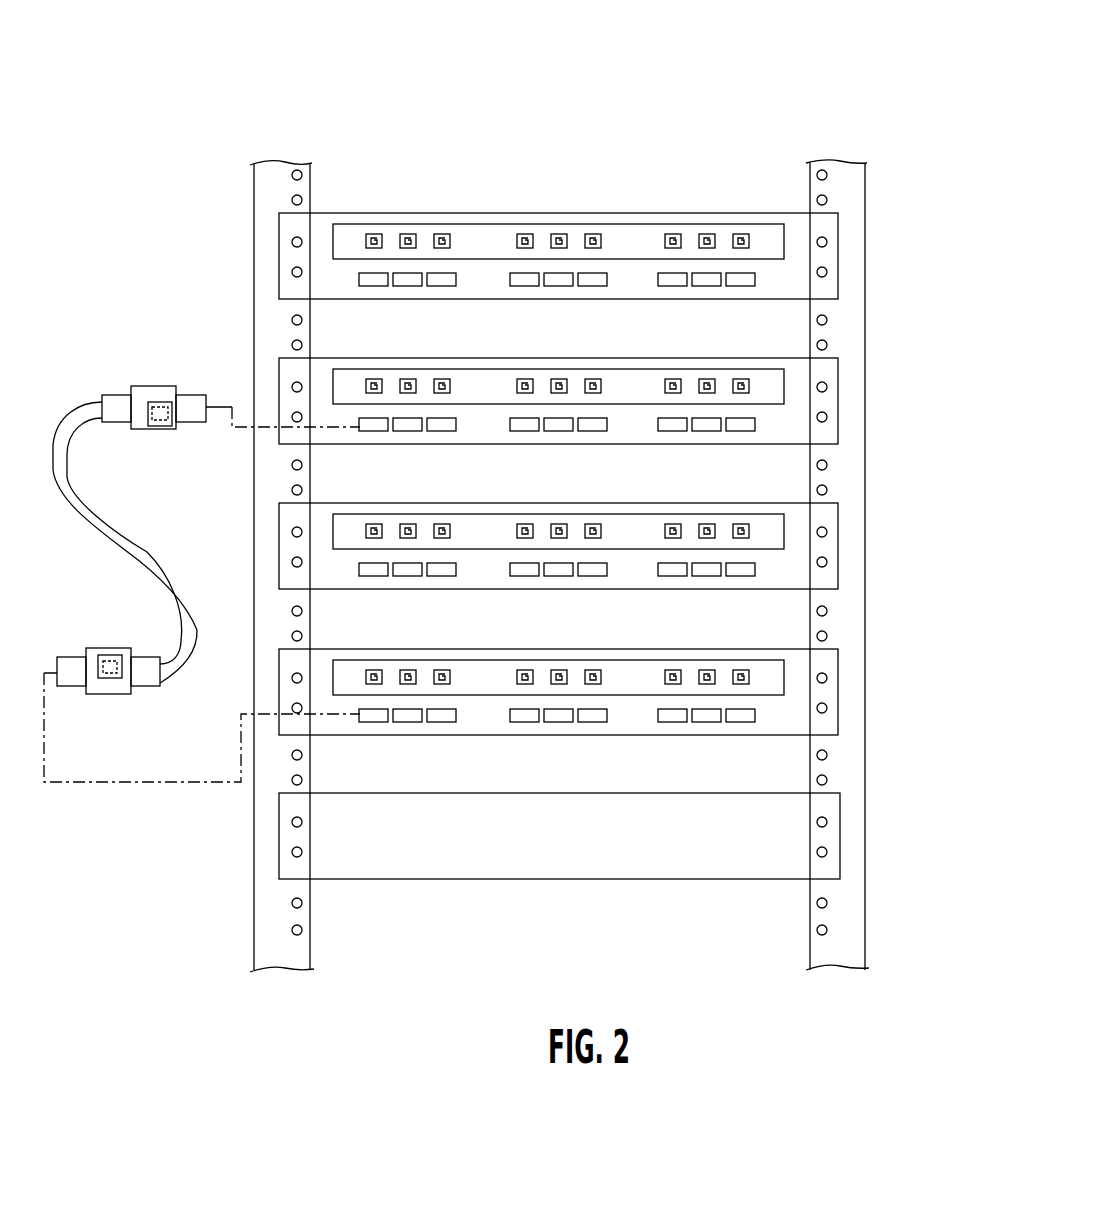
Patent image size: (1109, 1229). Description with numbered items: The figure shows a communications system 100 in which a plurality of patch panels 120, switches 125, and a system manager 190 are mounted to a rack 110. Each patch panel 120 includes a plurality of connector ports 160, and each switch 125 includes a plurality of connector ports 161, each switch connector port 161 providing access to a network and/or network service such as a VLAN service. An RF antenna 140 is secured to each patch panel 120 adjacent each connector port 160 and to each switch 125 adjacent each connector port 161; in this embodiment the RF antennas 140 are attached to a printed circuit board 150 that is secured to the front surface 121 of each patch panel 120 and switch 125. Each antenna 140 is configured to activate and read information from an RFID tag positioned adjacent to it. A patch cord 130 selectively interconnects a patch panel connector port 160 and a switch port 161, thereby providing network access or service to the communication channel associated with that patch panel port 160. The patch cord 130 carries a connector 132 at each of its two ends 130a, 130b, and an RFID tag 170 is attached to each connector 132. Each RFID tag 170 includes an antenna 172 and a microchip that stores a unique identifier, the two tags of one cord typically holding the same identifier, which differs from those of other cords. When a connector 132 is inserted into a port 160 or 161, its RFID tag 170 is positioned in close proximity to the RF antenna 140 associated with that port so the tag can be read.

The communications system 100 is at (842, 115).
The rack 110 is at (864, 272).
The patch panel 120 is at (771, 213).
The front surface 121 is at (826, 230).
The switch 125 is at (771, 503).
The patch cord 130 is at (133, 533).
The first end of patch cord 130a is at (77, 425).
The second end of patch cord 130b is at (193, 642).
The connector 132 is at (147, 432).
The RF antenna 140 is at (741, 234).
The printed circuit board 150 is at (345, 224).
The patch panel connector port 160 is at (660, 607).
The switch connector port 161 is at (660, 753).
The RFID tag 170 is at (165, 402).
The antenna 172 is at (158, 397).
The system manager 190 is at (632, 880).